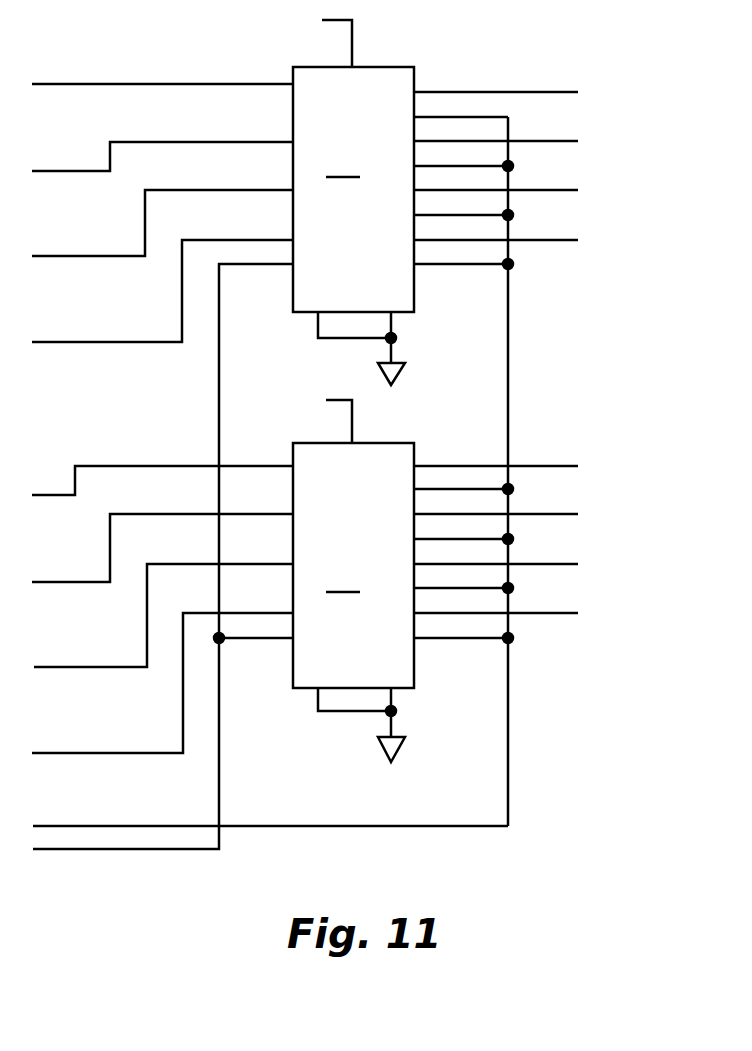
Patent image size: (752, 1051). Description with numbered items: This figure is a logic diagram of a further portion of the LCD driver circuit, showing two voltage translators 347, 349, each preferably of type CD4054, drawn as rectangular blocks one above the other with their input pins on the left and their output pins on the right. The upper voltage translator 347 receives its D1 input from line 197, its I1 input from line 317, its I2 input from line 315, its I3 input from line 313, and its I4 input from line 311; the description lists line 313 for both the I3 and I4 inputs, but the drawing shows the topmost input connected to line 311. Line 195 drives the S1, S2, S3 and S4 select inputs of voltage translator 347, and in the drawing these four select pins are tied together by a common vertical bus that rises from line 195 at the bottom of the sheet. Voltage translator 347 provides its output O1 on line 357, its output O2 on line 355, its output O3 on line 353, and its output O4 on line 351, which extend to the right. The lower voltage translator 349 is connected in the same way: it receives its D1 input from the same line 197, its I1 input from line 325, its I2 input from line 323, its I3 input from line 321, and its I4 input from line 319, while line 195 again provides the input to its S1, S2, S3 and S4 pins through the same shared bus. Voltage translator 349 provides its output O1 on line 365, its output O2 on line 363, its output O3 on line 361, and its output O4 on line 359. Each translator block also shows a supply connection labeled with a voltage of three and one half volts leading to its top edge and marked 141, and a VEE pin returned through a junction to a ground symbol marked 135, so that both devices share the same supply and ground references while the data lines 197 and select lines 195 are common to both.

The line 311 is at (45, 85).
The line 313 is at (45, 171).
The line 315 is at (45, 256).
The line 317 is at (45, 342).
The line 319 is at (115, 466).
The line 321 is at (45, 582).
The line 323 is at (47, 667).
The line 325 is at (45, 753).
The line 351 is at (568, 92).
The line 353 is at (568, 141).
The line 355 is at (568, 190).
The line 357 is at (568, 240).
The line 359 is at (568, 466).
The line 361 is at (568, 514).
The line 363 is at (568, 564).
The line 365 is at (568, 613).
The voltage translator 347 is at (353, 189).
The voltage translator 349 is at (353, 565).
The 3.5 V supply line 141 is at (352, 40).
The ground (VEE) 135 is at (400, 372).
The line 195 is at (45, 826).
The line 197 is at (45, 850).